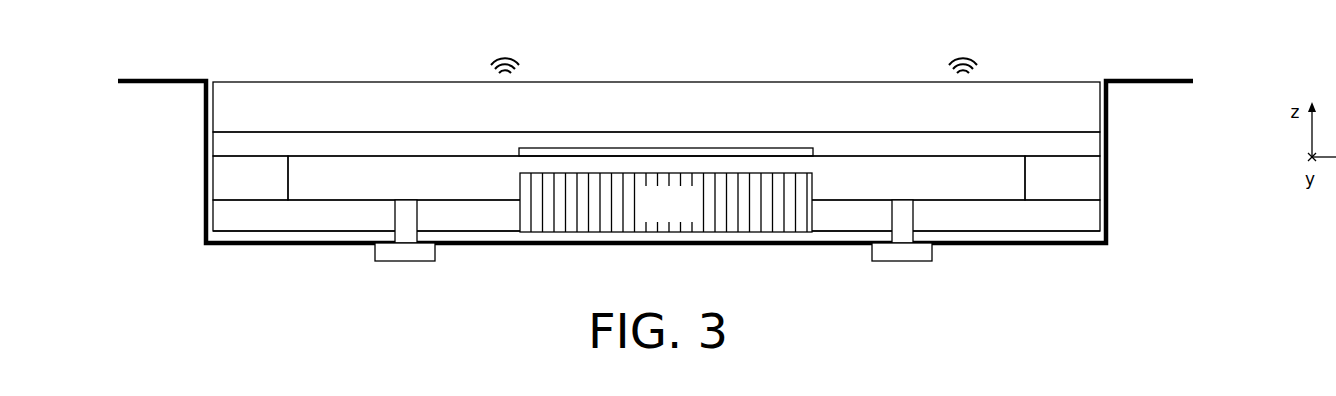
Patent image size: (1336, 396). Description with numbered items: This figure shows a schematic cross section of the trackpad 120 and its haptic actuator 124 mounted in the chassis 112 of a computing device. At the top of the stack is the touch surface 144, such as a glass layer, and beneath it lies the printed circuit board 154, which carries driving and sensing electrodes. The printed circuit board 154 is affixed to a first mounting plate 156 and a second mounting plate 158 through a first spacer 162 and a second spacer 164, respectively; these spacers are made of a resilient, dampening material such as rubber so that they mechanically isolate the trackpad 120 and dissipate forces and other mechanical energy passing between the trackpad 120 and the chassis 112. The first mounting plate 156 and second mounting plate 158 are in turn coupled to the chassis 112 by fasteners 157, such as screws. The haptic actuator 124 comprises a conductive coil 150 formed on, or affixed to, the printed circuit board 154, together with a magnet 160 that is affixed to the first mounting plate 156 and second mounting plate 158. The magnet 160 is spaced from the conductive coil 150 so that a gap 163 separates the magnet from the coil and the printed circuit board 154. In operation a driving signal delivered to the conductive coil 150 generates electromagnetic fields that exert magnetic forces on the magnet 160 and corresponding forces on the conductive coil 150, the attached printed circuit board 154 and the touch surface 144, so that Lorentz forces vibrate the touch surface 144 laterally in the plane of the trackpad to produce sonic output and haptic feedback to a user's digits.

The trackpad 120 is at (1013, 36).
The chassis 112 is at (1160, 81).
The touch surface 144 is at (687, 82).
The printed circuit board 154 is at (422, 148).
The first spacer 162 is at (233, 175).
The second spacer 164 is at (1083, 177).
The haptic actuator 124 is at (876, 169).
The first mounting plate 156 is at (233, 213).
The second mounting plate 158 is at (1087, 213).
The conductive coil 150 is at (540, 153).
The gap 163 is at (806, 161).
The magnet 160 is at (648, 215).
The fasteners 157 is at (400, 262).